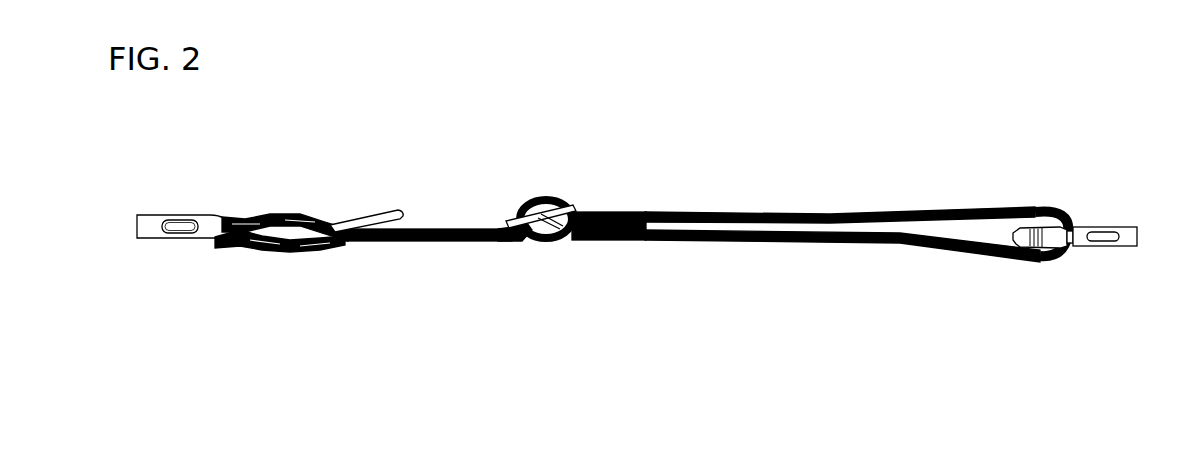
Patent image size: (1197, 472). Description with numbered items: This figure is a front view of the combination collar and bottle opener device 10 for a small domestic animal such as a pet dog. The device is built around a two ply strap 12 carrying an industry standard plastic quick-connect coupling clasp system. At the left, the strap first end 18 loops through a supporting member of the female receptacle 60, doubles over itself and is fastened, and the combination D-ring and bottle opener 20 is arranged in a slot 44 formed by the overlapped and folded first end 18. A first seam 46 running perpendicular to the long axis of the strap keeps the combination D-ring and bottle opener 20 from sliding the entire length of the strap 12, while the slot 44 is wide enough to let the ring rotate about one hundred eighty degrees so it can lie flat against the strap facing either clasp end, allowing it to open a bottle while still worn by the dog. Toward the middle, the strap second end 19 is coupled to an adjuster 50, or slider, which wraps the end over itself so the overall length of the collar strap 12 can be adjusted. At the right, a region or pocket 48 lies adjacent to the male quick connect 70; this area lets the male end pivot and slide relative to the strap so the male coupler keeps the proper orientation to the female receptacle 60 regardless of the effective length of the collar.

The combination collar and bottle opener device 10 is at (380, 112).
The strap 12 is at (820, 244).
The strap first end 18 is at (345, 252).
The strap second end 19 is at (632, 240).
The combination D-ring and bottle opener 20 is at (390, 208).
The slot 44 is at (297, 282).
The first seam 46 is at (257, 252).
The pocket 48 is at (990, 237).
The adjuster 50 is at (555, 197).
The female receptacle 60 is at (155, 215).
The male quick connect 70 is at (1093, 227).